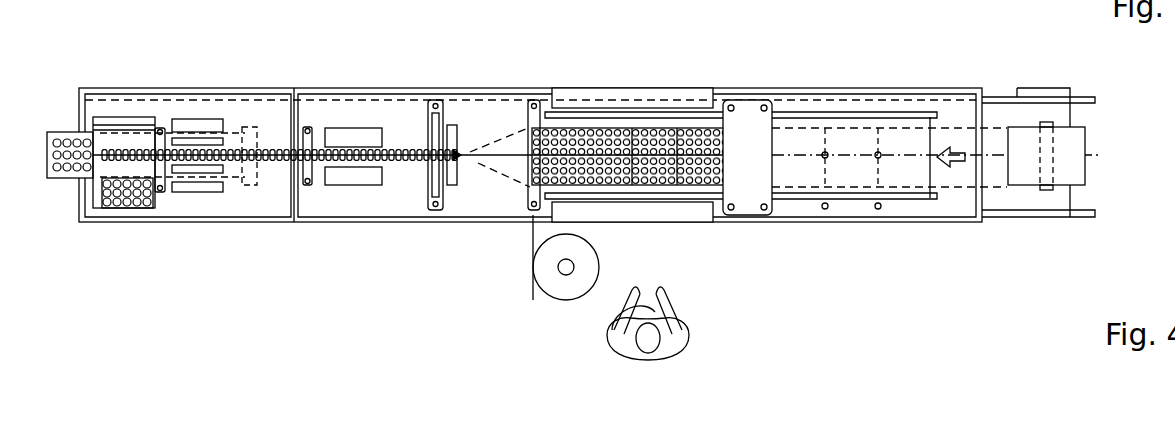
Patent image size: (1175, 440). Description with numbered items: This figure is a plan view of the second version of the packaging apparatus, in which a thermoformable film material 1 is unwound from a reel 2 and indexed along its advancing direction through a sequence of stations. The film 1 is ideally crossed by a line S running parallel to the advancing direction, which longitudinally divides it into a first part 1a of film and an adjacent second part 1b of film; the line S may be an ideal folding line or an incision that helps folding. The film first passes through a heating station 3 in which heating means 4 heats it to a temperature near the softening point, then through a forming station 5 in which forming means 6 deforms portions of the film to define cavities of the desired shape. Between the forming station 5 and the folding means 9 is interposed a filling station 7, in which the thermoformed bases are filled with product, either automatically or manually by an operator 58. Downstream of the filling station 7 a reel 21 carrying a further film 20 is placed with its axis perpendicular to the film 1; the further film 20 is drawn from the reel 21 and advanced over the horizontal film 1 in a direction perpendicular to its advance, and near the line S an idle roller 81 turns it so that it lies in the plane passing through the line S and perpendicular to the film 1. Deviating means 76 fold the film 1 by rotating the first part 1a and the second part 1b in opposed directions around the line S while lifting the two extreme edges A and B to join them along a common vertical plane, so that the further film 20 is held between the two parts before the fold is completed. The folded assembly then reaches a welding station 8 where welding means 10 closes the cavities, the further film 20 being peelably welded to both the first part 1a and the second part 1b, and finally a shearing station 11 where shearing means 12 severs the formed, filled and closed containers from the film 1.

The thermoformable film material 1 is at (997, 172).
The first part of film 1a is at (908, 173).
The second part of film 1b is at (858, 133).
The reel 2 is at (1087, 138).
The heating station 3 is at (934, 82).
The heating means 4 is at (902, 135).
The forming station 5 is at (776, 80).
The forming means 6 is at (746, 120).
The filling station 7 is at (686, 232).
The welding station 8 is at (353, 196).
The folding means 9 is at (417, 103).
The welding means 10 is at (355, 135).
The shearing station 11 is at (185, 234).
The shearing means 12 is at (195, 128).
The further film 20 is at (532, 232).
The reel 21 is at (547, 295).
The operator 58 is at (709, 315).
The deviating means 76 is at (486, 143).
The idle roller 81 is at (527, 172).
The extreme edge of the film A is at (963, 187).
The extreme edge of the film B is at (965, 127).
The line S is at (1097, 158).